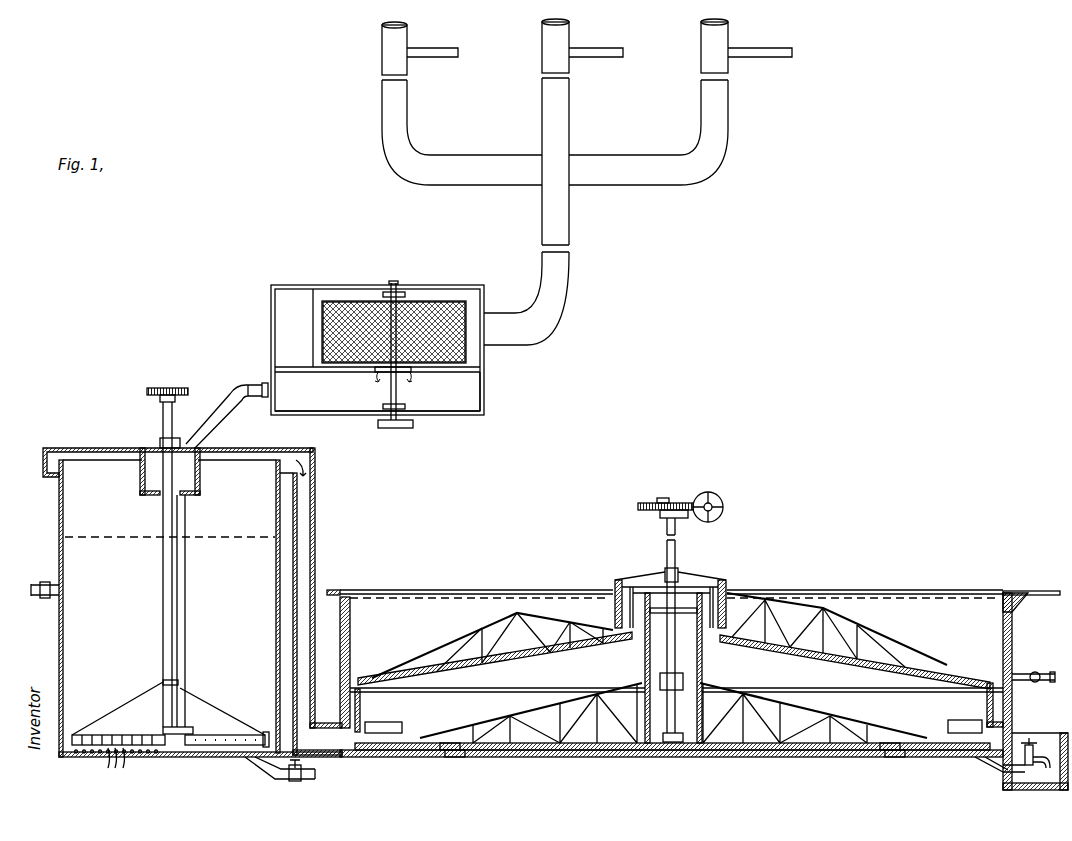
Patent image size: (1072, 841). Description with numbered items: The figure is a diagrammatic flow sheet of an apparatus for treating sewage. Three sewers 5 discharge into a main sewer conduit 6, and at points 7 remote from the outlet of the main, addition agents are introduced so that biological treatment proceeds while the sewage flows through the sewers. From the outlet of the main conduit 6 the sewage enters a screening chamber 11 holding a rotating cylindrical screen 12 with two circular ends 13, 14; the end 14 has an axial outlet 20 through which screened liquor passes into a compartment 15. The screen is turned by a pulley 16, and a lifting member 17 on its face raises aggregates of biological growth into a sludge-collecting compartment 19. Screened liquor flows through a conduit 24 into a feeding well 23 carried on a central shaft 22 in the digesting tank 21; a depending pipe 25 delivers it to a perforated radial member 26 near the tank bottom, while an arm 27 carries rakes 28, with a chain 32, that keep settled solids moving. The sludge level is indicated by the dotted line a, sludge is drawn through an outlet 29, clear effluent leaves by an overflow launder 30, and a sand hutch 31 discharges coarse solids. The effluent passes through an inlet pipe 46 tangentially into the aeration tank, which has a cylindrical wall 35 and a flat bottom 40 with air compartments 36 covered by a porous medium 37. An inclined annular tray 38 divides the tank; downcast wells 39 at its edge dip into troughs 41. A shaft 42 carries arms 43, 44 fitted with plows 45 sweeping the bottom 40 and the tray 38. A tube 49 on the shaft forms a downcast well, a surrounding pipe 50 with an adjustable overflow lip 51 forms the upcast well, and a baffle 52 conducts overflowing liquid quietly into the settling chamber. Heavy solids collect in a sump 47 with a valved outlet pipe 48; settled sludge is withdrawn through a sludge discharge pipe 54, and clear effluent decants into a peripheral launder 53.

The sewers 5 is at (381, 107).
The main sewer conduit 6 is at (526, 284).
The points for introducing addition agents 7 is at (414, 50).
The screening chamber 11 is at (333, 296).
The cylindrical screen 12 is at (418, 311).
The circular end of screen 13 is at (355, 300).
The circular end of screen 14 is at (470, 364).
The compartment 15 is at (452, 403).
The pulley 16 is at (398, 427).
The transverse baffle or lifting member 17 is at (321, 319).
The sludge-collecting compartment 19 is at (284, 343).
The axial outlet 20 is at (385, 367).
The digesting tank 21 is at (59, 512).
The shaft 22 is at (165, 546).
The feeding well 23 is at (155, 470).
The conduit 24 is at (215, 422).
The depending pipe 25 is at (186, 592).
The radially disposed member 26 is at (218, 735).
The radially disposed arm 27 is at (122, 734).
The plows or rakes 28 is at (117, 772).
The outlet 29 is at (45, 598).
The overflow launder 30 is at (48, 462).
The sand hutch or blow-off 31 is at (268, 763).
The chain 32 is at (97, 757).
The cylindrical wall 35 is at (677, 690).
The air compartments 36 is at (453, 750).
The porous medium 37 is at (448, 745).
The transverse tray or shelf 38 is at (587, 653).
The downcast wells 39 is at (361, 709).
The bottom 40 is at (636, 757).
The troughs 41 is at (383, 736).
The shaft 42 is at (678, 556).
The radially disposed arms 43 is at (838, 745).
The radially disposed arms 44 is at (850, 642).
The plows or scrapers 45 is at (520, 652).
The inlet pipe 46 is at (318, 563).
The sump 47 is at (992, 768).
The valved outlet pipe 48 is at (1035, 760).
The cylindrical pipe or tube 49 is at (702, 663).
The cylindrical pipe or well 50 is at (714, 607).
The adjustable overflow lip 51 is at (716, 588).
The cylindrical baffle 52 is at (613, 585).
The peripheral launder 53 is at (1027, 582).
The sludge discharge pipe 54 is at (1024, 672).
The sludge level a is at (205, 538).